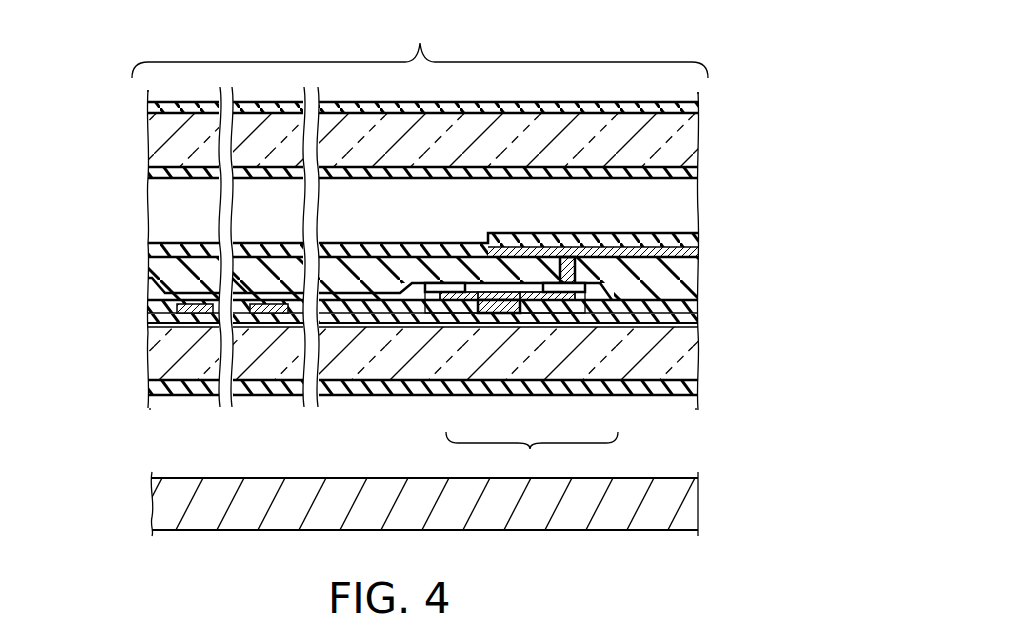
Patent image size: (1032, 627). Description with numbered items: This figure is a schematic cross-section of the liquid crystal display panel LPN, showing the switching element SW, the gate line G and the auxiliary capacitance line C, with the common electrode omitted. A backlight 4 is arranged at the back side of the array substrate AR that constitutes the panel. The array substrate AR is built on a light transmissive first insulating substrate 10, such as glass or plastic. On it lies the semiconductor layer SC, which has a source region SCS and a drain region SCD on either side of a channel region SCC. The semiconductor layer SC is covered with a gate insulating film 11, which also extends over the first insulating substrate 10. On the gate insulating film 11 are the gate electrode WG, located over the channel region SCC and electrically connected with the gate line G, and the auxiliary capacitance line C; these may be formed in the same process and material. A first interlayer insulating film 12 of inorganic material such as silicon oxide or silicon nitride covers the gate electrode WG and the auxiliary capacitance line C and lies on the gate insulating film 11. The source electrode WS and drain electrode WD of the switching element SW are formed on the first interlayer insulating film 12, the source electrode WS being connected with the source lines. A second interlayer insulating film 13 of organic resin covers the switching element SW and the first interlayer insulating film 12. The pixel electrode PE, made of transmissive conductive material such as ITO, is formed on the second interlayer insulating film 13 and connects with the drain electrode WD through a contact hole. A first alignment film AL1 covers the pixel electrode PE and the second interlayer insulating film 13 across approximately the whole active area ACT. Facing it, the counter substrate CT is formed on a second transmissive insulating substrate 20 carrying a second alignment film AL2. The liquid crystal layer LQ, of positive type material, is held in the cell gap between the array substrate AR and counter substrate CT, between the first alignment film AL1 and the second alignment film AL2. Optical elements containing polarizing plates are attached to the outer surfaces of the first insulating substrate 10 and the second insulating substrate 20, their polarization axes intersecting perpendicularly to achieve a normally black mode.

The active area ACT is at (420, 49).
The counter substrate CT is at (147, 132).
The second insulating substrate 20 is at (150, 150).
The second alignment film AL2 is at (150, 173).
The liquid crystal layer LQ is at (156, 211).
The first alignment film AL1 is at (150, 250).
The pixel electrode PE is at (622, 256).
The second interlayer insulating film 13 is at (150, 272).
The first interlayer insulating film 12 is at (158, 307).
The gate insulating film 11 is at (156, 321).
The first insulating substrate 10 is at (160, 355).
The array substrate AR is at (147, 291).
The liquid crystal display panel LPN is at (127, 410).
The gate line G is at (192, 302).
The auxiliary capacitance line C is at (266, 302).
The source electrode WS is at (433, 282).
The gate electrode WG is at (492, 298).
The drain electrode WD is at (558, 282).
The switching element SW is at (457, 340).
The source region SCS is at (462, 301).
The channel region SCC is at (497, 301).
The drain region SCD is at (562, 301).
The semiconductor layer SC is at (529, 384).
The backlight 4 is at (690, 502).